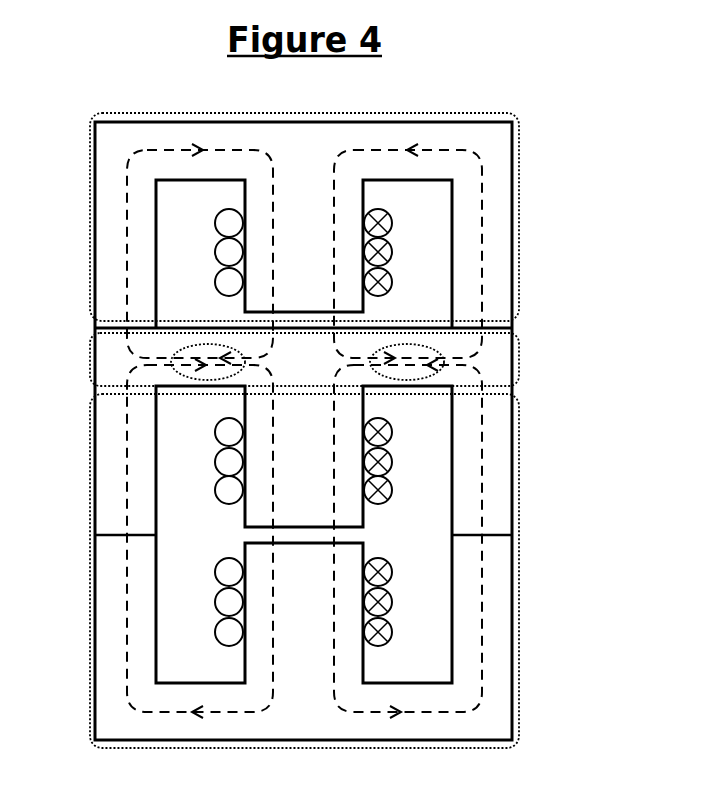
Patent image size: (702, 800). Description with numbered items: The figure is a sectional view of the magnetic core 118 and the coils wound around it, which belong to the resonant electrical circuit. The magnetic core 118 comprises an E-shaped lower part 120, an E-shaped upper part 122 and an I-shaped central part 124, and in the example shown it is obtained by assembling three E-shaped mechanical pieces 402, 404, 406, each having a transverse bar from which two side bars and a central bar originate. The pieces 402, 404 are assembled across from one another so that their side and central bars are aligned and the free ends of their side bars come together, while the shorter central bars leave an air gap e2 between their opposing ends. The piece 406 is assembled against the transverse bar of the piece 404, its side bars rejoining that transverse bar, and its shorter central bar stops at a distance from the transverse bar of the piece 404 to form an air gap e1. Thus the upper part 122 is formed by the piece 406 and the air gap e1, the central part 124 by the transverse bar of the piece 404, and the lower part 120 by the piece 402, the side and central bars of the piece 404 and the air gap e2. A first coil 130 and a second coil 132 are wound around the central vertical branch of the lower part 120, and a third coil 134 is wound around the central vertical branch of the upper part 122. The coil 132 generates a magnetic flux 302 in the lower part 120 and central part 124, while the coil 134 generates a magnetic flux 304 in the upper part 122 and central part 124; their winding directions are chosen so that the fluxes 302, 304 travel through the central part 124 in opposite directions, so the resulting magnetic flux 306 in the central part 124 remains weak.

The magnetic core 118 is at (530, 388).
The upper part 122 is at (89, 181).
The central part 124 is at (89, 375).
The lower part 120 is at (89, 459).
The third coil 134 is at (215, 252).
The second coil 132 is at (215, 462).
The first coil 130 is at (215, 602).
The E-shaped mechanical piece 406 is at (323, 216).
The E-shaped mechanical piece 404 is at (323, 431).
The E-shaped mechanical piece 402 is at (323, 665).
The resulting magnetic flux 306 is at (370, 362).
The magnetic flux 304 is at (334, 285).
The magnetic flux 302 is at (334, 510).
The air gap e1 is at (368, 320).
The air gap e2 is at (368, 537).